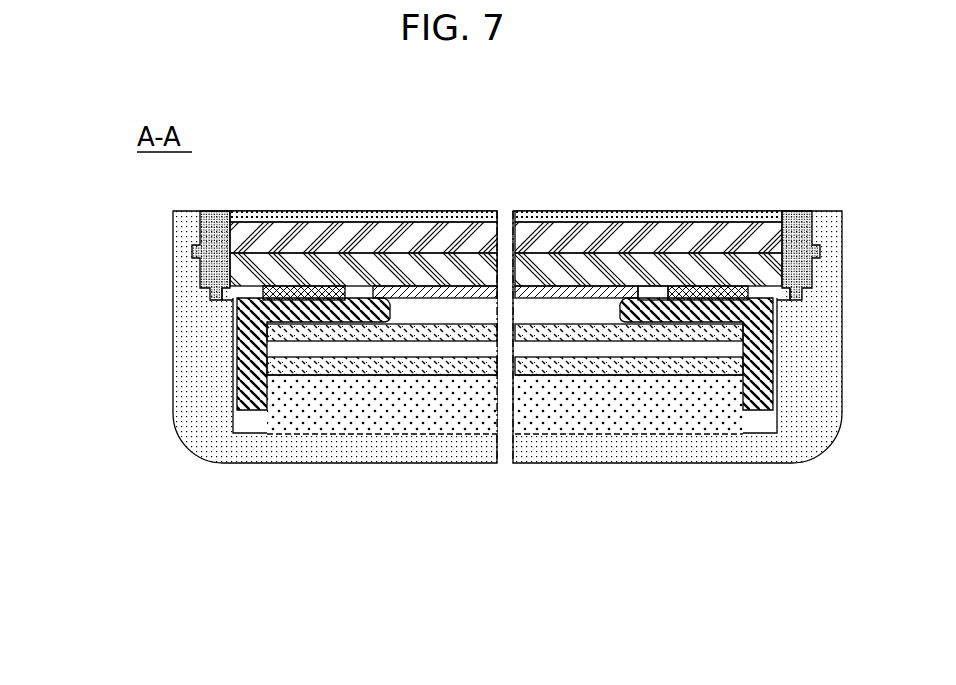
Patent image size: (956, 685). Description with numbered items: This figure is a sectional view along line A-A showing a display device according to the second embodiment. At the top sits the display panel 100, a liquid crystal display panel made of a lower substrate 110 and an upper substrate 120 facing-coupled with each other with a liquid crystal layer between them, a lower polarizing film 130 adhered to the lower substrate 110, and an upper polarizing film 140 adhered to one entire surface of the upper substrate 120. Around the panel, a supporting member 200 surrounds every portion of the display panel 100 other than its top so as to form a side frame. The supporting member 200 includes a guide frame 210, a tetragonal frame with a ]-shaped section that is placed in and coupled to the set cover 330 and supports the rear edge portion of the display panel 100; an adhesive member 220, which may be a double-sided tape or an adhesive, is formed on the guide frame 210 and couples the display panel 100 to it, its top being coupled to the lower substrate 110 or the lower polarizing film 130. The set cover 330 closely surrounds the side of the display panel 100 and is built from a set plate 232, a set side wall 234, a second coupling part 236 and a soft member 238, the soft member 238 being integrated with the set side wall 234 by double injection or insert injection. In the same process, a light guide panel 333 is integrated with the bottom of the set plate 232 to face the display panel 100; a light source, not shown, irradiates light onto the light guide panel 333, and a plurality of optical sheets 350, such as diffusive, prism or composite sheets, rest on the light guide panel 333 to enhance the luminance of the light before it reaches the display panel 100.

The display panel 100 is at (506, 206).
The lower substrate 110 is at (431, 270).
The upper substrate 120 is at (391, 240).
The lower polarizing film 130 is at (486, 292).
The upper polarizing film 140 is at (346, 215).
The supporting member 200 is at (828, 540).
The guide frame 210 is at (758, 392).
The adhesive member 220 is at (713, 294).
The set plate 232 is at (290, 458).
The set side wall 234 is at (193, 345).
The second coupling part 236 is at (243, 320).
The soft member 238 is at (212, 262).
The set cover 330 is at (78, 278).
The light guide panel 333 is at (283, 408).
The optical sheets 350 is at (541, 330).